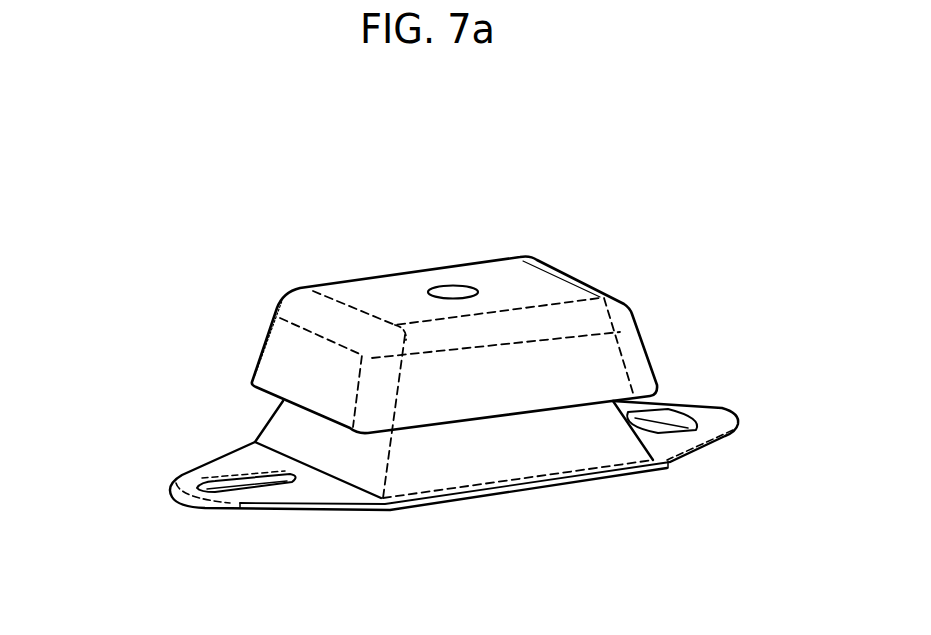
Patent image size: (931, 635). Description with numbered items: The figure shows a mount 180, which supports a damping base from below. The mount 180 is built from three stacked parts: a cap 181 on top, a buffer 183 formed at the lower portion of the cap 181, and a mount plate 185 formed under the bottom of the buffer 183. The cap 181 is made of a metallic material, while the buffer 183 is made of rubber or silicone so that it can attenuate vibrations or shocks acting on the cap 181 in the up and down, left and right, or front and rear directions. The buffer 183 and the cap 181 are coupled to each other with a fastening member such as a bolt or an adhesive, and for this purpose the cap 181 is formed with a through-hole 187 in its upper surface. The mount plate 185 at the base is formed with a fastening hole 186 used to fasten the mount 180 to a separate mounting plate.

The mount 180 is at (590, 258).
The cap 181 is at (290, 354).
The buffer 183 is at (293, 427).
The mount plate 185 is at (178, 480).
The fastening hole 186 is at (683, 422).
The through-hole 187 is at (448, 290).